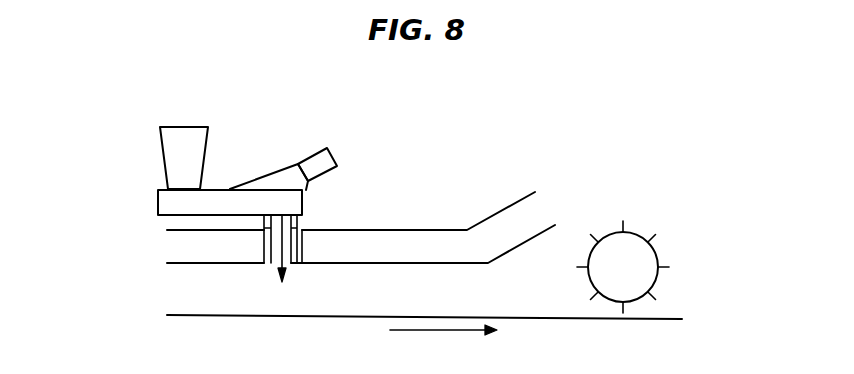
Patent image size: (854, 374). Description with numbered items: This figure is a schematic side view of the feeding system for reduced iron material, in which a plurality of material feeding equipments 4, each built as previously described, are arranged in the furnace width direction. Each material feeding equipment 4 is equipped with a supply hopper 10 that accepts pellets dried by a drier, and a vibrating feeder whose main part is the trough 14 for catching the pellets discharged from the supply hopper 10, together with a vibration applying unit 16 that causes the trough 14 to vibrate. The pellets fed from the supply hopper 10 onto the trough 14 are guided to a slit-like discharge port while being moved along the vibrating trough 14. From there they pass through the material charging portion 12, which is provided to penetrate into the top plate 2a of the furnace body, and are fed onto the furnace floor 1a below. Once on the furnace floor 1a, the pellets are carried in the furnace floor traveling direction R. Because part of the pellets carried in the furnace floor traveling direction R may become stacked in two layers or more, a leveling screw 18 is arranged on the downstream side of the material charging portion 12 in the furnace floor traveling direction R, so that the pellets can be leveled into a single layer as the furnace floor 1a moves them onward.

The furnace floor 1a is at (253, 313).
The top plate 2a is at (388, 230).
The material feeding equipment 4 is at (283, 139).
The supply hopper 10 is at (150, 143).
The material charging portion 12 is at (302, 243).
The trough 14 is at (150, 200).
The vibration applying unit 16 is at (338, 150).
The leveling screw 18 is at (627, 240).
The furnace floor traveling direction R is at (433, 332).